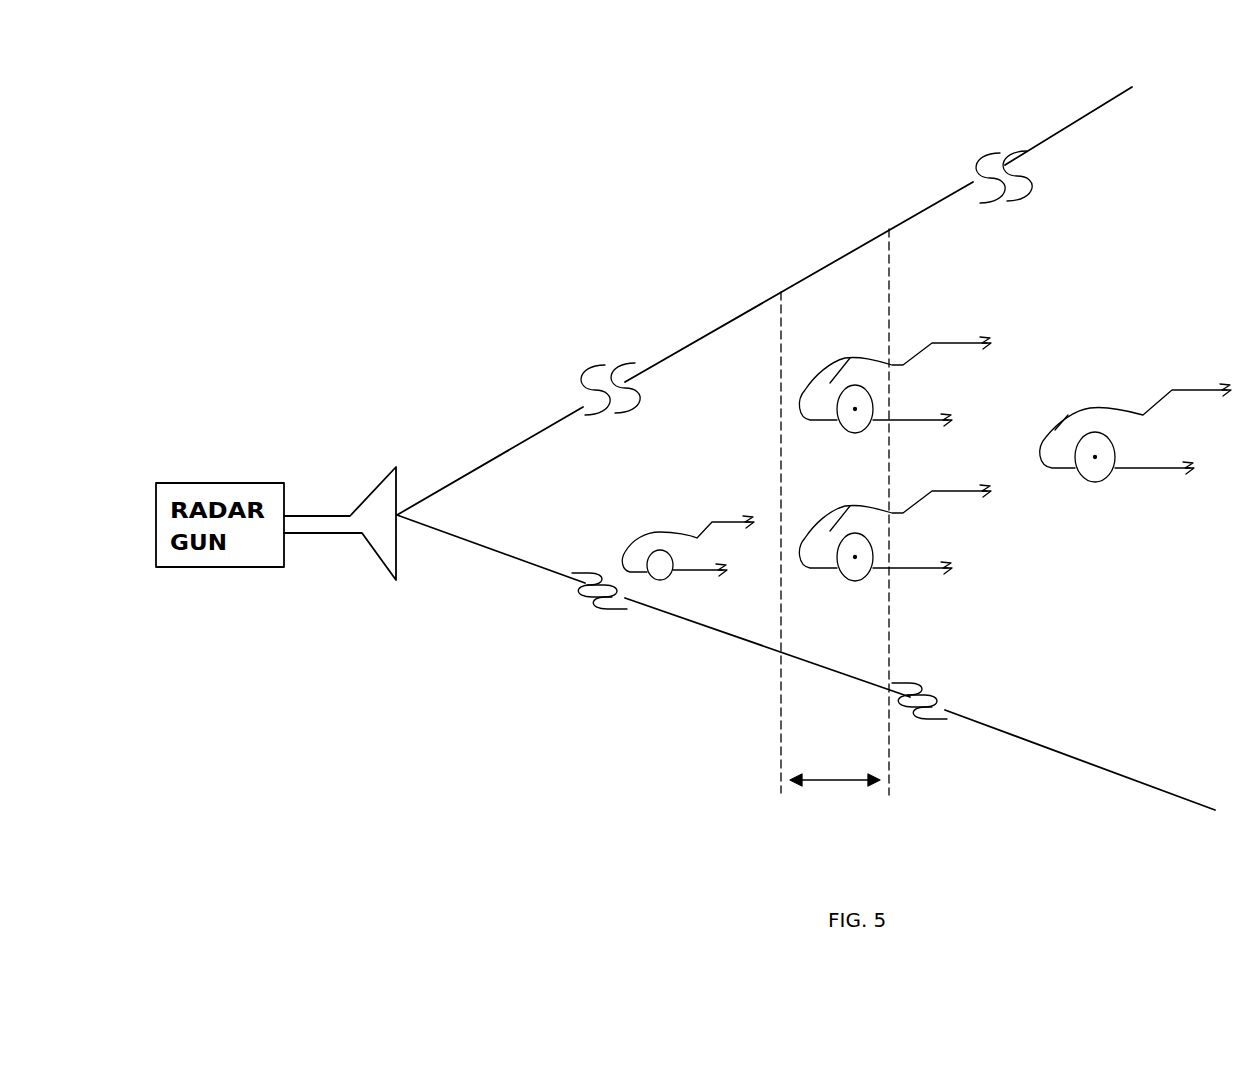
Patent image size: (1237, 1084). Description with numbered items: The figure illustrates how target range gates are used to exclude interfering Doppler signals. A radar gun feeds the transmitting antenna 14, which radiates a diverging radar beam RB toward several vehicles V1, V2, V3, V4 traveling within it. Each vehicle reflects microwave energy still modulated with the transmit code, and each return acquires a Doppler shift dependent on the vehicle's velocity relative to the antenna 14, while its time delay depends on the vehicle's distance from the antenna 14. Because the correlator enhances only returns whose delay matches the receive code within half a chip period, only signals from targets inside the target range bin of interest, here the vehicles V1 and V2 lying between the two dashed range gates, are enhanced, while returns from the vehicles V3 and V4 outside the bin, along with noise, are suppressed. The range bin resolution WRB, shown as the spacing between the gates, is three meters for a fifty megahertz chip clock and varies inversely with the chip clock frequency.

The transmitting antenna 14 is at (362, 535).
The radar beam RB is at (530, 437).
The range bin resolution WRB is at (815, 782).
The vehicle V1 is at (830, 375).
The vehicle V2 is at (817, 530).
The vehicle V3 is at (678, 571).
The vehicle V4 is at (1057, 430).